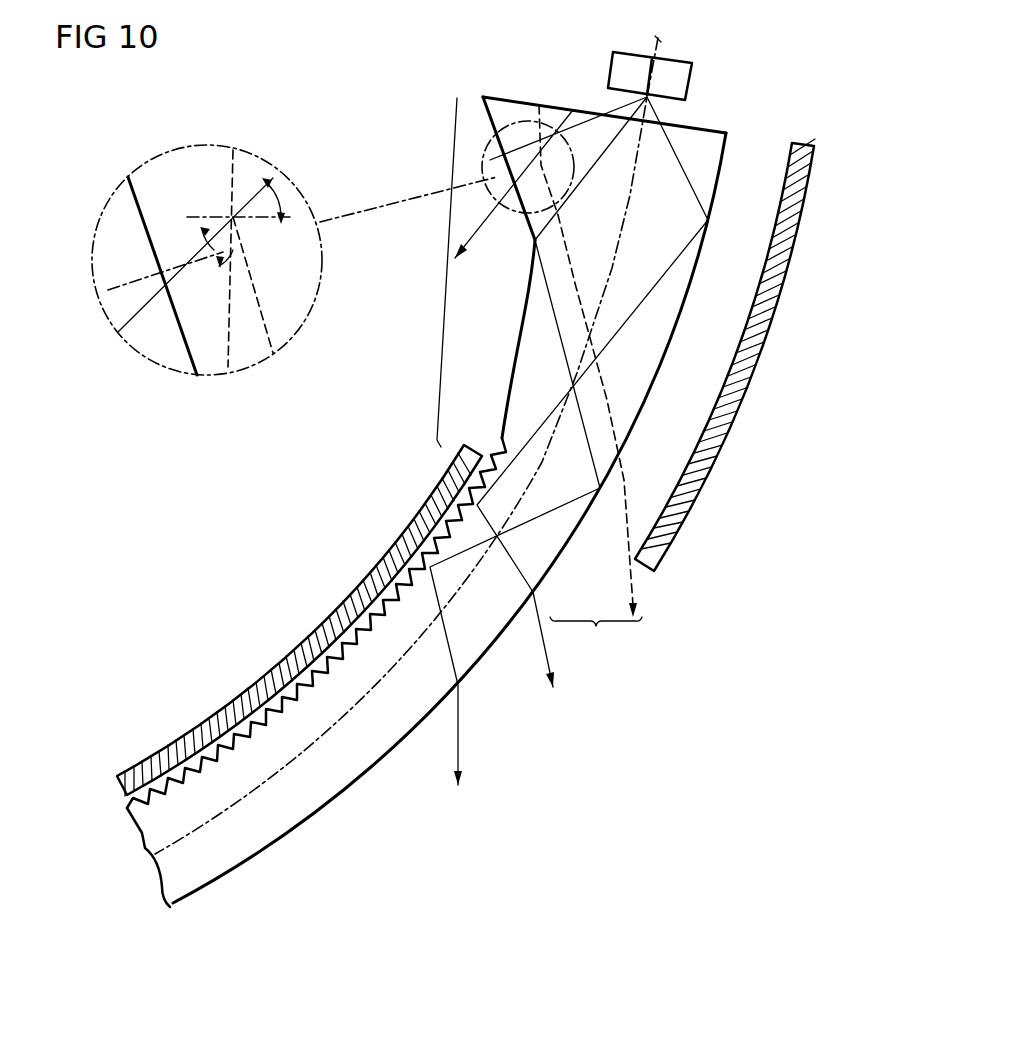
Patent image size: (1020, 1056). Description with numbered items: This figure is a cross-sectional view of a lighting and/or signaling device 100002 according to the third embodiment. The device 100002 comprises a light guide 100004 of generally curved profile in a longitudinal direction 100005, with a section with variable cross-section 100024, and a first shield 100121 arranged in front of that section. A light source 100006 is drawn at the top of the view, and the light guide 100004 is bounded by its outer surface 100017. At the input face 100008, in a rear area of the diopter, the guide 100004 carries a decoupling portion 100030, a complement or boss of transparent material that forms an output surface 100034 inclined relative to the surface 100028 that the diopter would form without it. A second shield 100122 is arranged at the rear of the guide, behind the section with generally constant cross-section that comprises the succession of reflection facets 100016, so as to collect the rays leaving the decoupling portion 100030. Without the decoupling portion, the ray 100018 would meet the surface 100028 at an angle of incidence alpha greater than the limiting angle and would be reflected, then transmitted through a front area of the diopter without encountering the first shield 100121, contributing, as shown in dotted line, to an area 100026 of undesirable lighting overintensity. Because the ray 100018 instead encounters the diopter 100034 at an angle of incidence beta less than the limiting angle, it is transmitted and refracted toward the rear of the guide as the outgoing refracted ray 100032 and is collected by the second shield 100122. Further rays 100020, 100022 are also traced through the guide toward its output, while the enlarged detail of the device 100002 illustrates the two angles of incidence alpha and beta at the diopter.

The lighting and/or signaling device 100002 is at (322, 136).
The light guide 100004 is at (305, 590).
The longitudinal direction 100005 is at (663, 42).
The light emitting element 100006 is at (613, 63).
The input face 100008 is at (535, 108).
The reflection facets 100016 is at (122, 795).
The outer surface of light guide 100017 is at (330, 808).
The ray 100018 is at (607, 99).
The light beam 100020 is at (583, 182).
The light beam 100022 is at (659, 110).
The section with variable cross-section 100024 is at (447, 262).
The area of undesirable lighting overintensity 100026 is at (596, 640).
The surface of the diopter without the decoupling portion 100028 is at (512, 102).
The decoupling portion 100030 is at (503, 140).
The outgoing refracted ray 100032 is at (483, 223).
The output surface 100034 is at (497, 160).
The first shield 100121 is at (703, 472).
The second shield 100122 is at (213, 727).